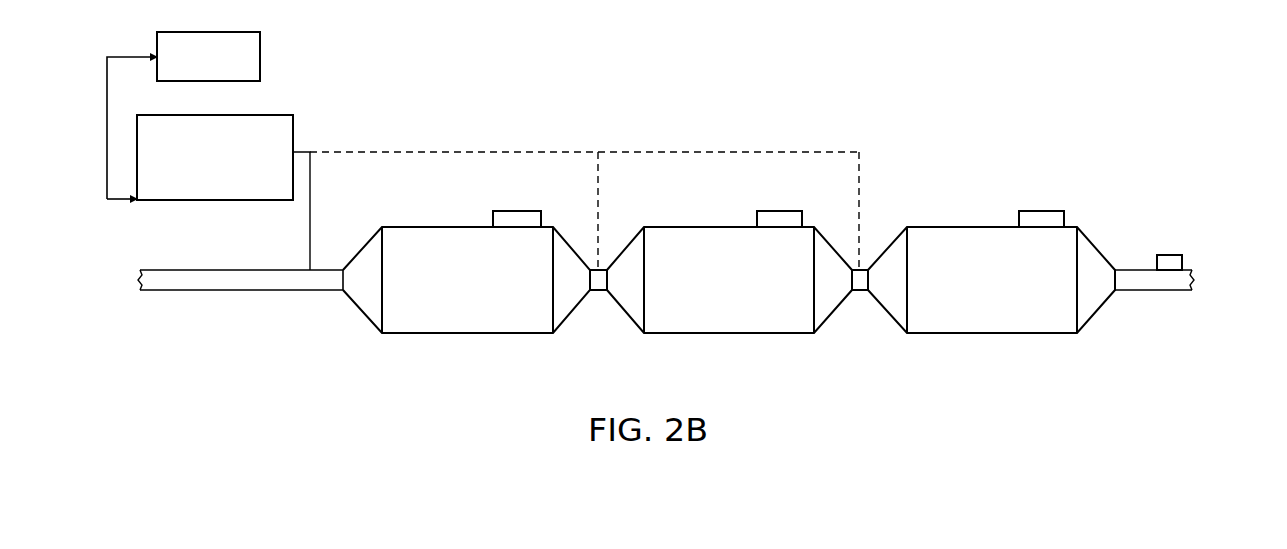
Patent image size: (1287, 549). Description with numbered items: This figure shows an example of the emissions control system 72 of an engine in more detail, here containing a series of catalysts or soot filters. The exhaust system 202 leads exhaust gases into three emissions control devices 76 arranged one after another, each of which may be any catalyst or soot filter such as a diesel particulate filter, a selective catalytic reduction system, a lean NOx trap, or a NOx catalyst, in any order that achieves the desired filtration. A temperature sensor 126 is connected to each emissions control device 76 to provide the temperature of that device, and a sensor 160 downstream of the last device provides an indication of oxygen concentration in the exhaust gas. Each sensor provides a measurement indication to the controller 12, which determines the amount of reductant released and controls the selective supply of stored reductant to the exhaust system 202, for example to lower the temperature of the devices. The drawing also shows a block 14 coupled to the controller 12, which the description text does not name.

The controller 12 is at (208, 56).
The controller 14 is at (215, 157).
The emissions control system 72 is at (518, 120).
The emissions control device 76 is at (729, 280).
The temperature sensor 126 is at (517, 210).
The sensor 160 is at (1169, 254).
The exhaust system 202 is at (238, 268).